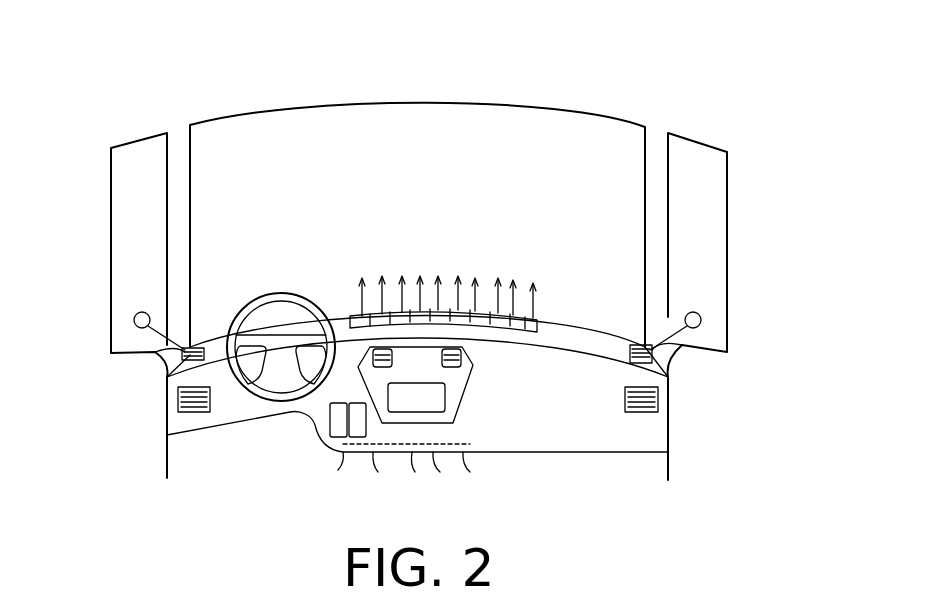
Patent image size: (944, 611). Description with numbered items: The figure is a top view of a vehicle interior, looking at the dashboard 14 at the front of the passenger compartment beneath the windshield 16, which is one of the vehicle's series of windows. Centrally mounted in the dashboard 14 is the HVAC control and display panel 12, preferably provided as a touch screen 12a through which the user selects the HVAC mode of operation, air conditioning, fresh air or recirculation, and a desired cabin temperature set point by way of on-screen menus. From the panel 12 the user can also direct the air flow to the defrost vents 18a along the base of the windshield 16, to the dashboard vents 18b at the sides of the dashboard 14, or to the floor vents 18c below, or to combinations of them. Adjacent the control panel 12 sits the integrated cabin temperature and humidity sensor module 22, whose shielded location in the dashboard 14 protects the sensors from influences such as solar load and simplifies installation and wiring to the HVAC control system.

The HVAC control and display panel 12 is at (461, 297).
The touch screen 12a is at (422, 390).
The dashboard 14 is at (645, 438).
The windshield 16 is at (540, 135).
The defrost vents 18a is at (197, 345).
The dashboard vents 18b is at (182, 413).
The floor vents 18c is at (340, 450).
The integrated cabin temperature and humidity sensor module 22 is at (310, 422).